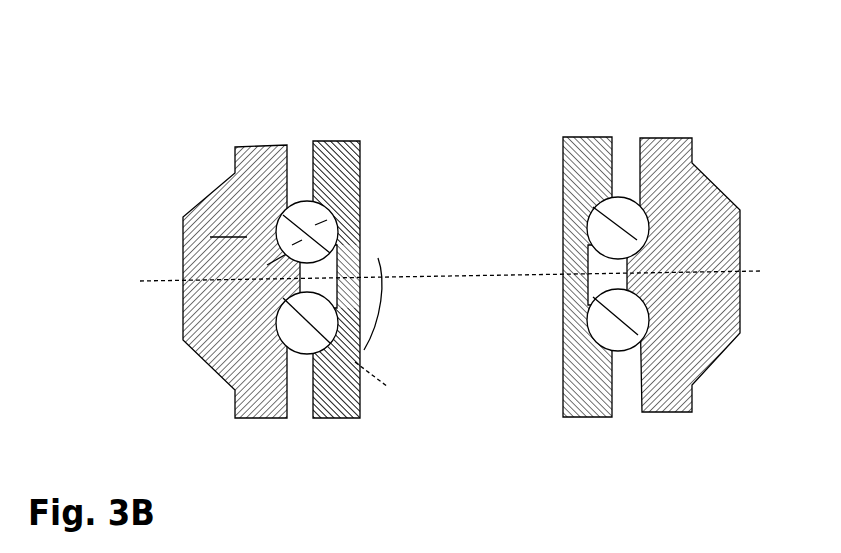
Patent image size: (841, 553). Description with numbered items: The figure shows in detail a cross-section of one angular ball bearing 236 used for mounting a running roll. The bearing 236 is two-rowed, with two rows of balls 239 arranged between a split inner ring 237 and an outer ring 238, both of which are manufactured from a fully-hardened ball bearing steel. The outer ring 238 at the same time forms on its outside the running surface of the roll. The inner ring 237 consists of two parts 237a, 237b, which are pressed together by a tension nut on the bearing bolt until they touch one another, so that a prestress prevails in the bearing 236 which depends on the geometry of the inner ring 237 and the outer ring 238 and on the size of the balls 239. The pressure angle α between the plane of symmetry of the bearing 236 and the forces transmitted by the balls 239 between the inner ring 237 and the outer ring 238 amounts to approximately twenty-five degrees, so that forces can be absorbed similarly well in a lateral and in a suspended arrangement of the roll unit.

The angular ball bearing 236 is at (431, 257).
The split inner ring 237 is at (460, 284).
The first part of the inner ring 237a is at (347, 175).
The second part of the inner ring 237b is at (343, 400).
The outer ring 238 is at (183, 218).
The balls 239 is at (305, 203).